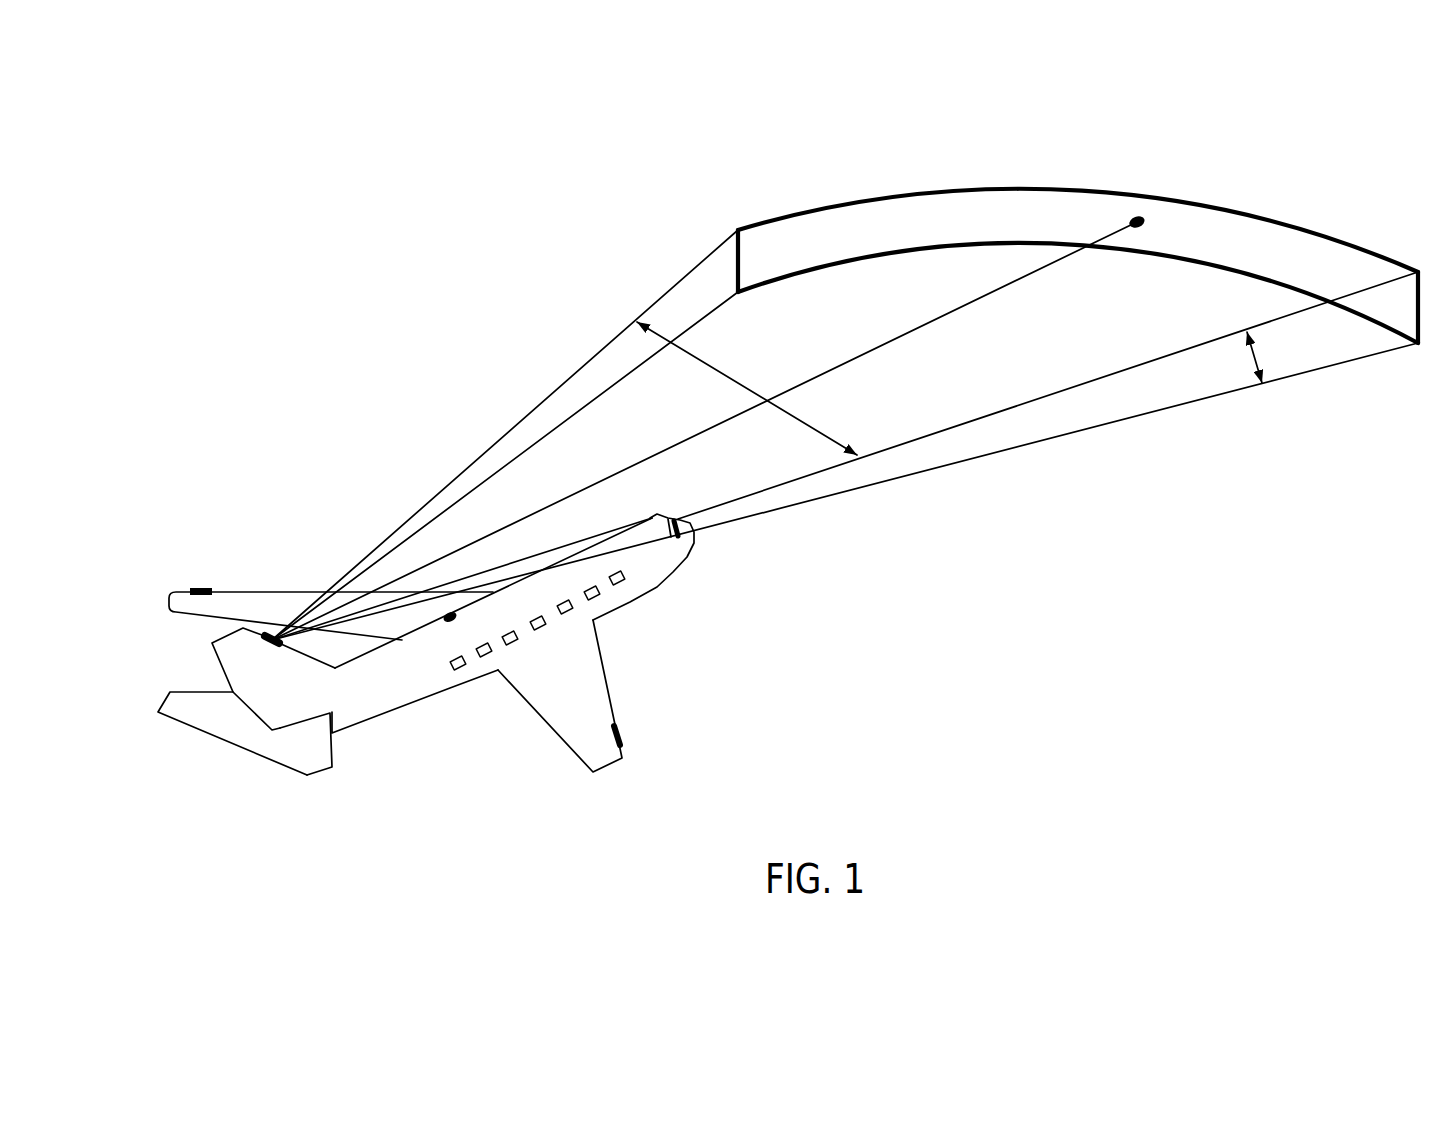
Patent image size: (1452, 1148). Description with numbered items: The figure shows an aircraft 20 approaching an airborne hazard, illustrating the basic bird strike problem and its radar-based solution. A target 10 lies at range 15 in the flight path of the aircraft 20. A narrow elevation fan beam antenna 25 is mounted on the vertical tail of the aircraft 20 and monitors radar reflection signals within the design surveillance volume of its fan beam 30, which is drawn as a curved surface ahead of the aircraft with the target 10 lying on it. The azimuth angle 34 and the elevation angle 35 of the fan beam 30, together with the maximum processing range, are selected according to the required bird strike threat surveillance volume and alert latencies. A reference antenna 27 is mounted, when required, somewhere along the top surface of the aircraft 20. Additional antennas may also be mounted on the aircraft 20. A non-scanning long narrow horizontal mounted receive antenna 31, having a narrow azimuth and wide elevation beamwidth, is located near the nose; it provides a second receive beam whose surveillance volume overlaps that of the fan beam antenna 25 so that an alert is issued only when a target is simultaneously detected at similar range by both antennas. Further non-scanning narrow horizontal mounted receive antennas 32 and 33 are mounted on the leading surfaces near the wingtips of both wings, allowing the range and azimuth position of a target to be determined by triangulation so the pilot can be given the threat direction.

The target 10 is at (1139, 218).
The range 15 is at (968, 305).
The aircraft 20 is at (467, 685).
The narrow elevation fan beam antenna 25 is at (277, 647).
The reference antenna 27 is at (447, 621).
The fan beam 30 is at (788, 214).
The non-scanning long narrow horizontal mounted receive antenna 31 is at (672, 522).
The non-scanning narrow horizontal mounted receive antenna 32 is at (623, 737).
The non-scanning narrow horizontal mounted receive antenna 33 is at (200, 588).
The azimuth angle 34 is at (745, 382).
The elevation angle 35 is at (1250, 363).